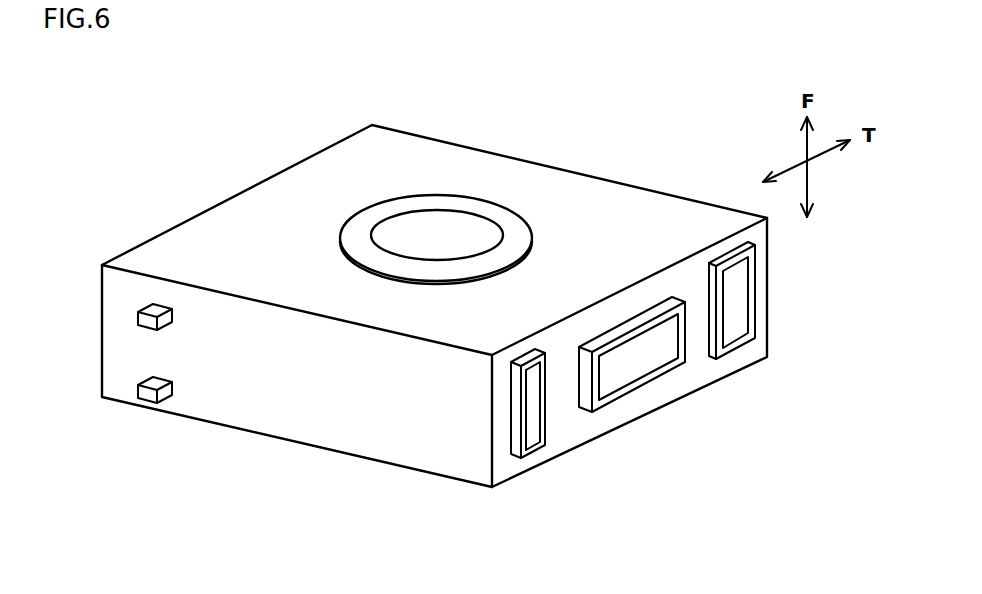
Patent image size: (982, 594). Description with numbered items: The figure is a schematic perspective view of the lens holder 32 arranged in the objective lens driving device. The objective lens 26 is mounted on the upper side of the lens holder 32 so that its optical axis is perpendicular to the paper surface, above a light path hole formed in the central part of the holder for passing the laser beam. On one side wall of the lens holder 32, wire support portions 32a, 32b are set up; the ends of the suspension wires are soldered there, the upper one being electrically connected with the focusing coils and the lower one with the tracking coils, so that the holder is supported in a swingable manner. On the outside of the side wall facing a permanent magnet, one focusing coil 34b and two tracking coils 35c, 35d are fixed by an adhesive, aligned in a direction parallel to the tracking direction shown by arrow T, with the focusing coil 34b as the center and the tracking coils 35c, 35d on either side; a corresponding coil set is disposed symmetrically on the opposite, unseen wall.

The lens holder 32 is at (450, 165).
The objective lens 26 is at (512, 242).
The wire support portion 32a is at (140, 315).
The wire support portion 32b is at (151, 402).
The tracking coil 35c is at (540, 465).
The focusing coil 34b is at (645, 392).
The tracking coil 35d is at (750, 360).